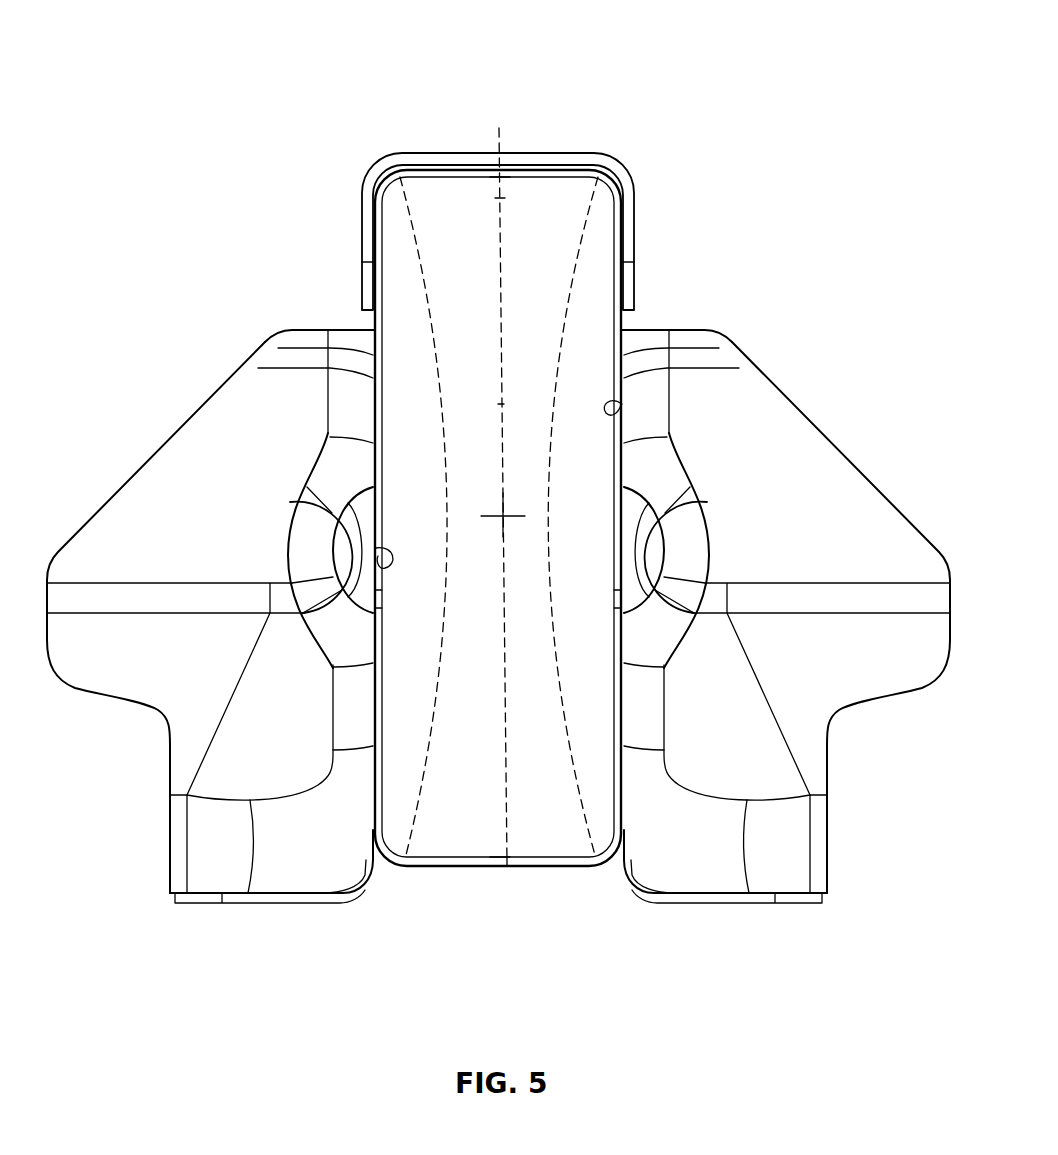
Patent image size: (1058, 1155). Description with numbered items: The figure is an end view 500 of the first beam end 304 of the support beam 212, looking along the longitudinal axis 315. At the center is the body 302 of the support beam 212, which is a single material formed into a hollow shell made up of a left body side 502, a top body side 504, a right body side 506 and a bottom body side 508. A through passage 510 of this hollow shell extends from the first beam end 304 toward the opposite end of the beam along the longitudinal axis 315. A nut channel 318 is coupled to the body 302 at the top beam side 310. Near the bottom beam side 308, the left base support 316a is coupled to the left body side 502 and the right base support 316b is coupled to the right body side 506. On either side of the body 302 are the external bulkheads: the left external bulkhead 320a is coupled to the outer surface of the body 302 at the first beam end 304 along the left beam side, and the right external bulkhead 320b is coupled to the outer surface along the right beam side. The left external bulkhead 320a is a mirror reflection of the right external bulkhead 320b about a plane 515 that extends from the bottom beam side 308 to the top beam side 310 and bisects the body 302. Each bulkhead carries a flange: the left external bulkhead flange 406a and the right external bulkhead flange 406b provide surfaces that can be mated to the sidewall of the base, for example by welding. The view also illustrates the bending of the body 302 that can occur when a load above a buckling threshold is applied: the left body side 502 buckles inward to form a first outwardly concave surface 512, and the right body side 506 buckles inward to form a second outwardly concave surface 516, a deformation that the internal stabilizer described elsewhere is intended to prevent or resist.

The end view 500 is at (212, 62).
The first beam end 304 is at (757, 203).
The nut channel 318 is at (604, 160).
The top beam side 310 is at (499, 110).
The first outwardly concave surface 512 is at (441, 383).
The second outwardly concave surface 516 is at (545, 634).
The longitudinal axis 315 is at (510, 514).
The top body side 504 is at (500, 172).
The bottom body side 508 is at (500, 853).
The plane 515 is at (500, 198).
The through passage 510 is at (503, 400).
The bottom beam side 308 is at (487, 878).
The body 302 is at (522, 878).
The left external bulkhead 320a is at (212, 390).
The right external bulkhead 320b is at (856, 455).
The support beam 212 is at (372, 326).
The left external bulkhead flange 406a is at (200, 439).
The right external bulkhead flange 406b is at (766, 400).
The left base support 316a is at (249, 898).
The right base support 316b is at (672, 900).
The left body side 502 is at (293, 503).
The right body side 506 is at (622, 404).